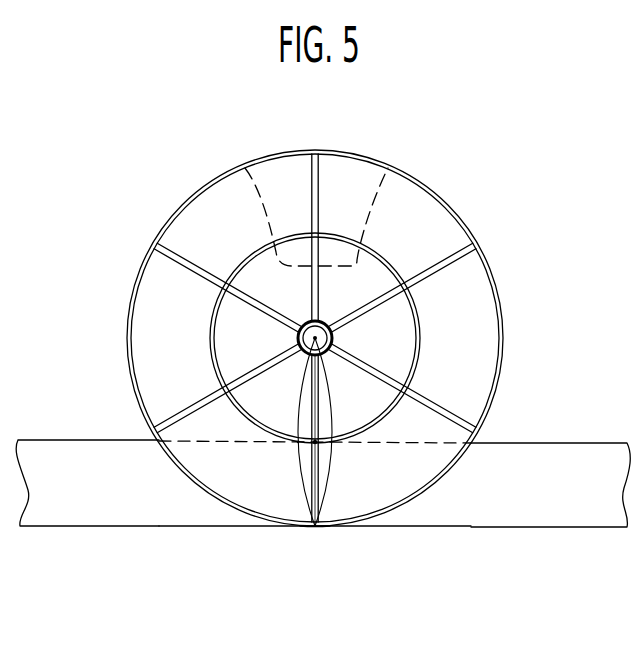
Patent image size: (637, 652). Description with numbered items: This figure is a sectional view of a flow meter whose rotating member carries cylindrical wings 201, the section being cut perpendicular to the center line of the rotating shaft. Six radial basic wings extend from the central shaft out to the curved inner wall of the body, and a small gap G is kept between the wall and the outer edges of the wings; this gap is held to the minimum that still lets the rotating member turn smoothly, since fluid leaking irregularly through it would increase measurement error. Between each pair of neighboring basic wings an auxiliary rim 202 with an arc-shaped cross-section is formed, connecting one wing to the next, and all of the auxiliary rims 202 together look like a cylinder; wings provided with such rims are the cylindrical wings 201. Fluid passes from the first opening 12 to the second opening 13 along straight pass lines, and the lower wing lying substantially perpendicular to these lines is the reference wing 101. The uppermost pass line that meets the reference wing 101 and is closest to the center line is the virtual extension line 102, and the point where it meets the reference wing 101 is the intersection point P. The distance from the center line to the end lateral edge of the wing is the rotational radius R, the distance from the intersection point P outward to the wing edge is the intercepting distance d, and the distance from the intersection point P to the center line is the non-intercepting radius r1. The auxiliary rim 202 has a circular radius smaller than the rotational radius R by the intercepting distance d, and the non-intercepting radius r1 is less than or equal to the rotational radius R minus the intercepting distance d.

The first opening 12 is at (73, 507).
The second opening 13 is at (553, 510).
The gap G is at (483, 432).
The reference wing 101 is at (315, 527).
The virtual extension line 102 is at (402, 443).
The cylindrical wing 201 is at (325, 183).
The auxiliary rim 202 is at (393, 263).
The rotational radius R is at (296, 470).
The intersection point P is at (298, 442).
The non-intercepting radius r1 is at (336, 398).
The intercepting distance d is at (332, 484).